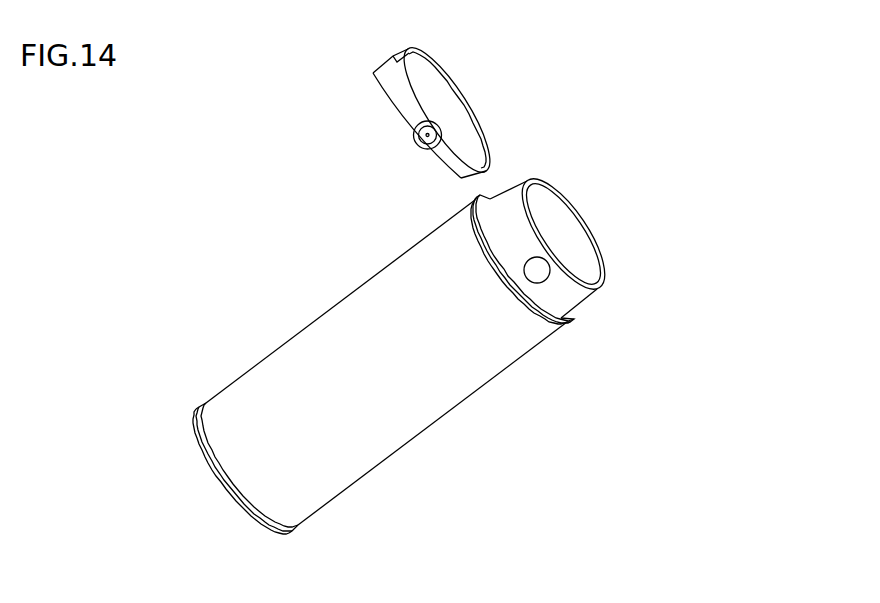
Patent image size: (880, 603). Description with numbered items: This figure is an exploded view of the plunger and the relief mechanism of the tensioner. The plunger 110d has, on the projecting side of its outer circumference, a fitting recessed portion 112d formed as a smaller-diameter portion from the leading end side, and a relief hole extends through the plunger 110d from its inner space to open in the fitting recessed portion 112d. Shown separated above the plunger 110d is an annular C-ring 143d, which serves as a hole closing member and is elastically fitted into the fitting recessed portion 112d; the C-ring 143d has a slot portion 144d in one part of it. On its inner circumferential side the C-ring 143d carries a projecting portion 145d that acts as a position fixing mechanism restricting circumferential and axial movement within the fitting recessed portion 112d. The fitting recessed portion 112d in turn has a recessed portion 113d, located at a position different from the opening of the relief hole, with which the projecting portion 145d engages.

The plunger 110d is at (323, 358).
The fitting recessed portion 112d is at (592, 305).
The recessed portion 113d is at (538, 270).
The C-ring 143d is at (461, 98).
The slot portion 144d is at (380, 62).
The projecting portion 145d is at (420, 140).